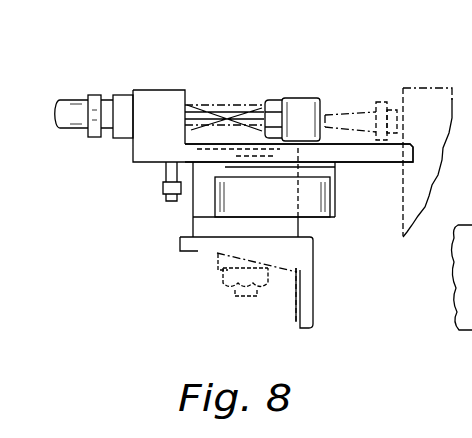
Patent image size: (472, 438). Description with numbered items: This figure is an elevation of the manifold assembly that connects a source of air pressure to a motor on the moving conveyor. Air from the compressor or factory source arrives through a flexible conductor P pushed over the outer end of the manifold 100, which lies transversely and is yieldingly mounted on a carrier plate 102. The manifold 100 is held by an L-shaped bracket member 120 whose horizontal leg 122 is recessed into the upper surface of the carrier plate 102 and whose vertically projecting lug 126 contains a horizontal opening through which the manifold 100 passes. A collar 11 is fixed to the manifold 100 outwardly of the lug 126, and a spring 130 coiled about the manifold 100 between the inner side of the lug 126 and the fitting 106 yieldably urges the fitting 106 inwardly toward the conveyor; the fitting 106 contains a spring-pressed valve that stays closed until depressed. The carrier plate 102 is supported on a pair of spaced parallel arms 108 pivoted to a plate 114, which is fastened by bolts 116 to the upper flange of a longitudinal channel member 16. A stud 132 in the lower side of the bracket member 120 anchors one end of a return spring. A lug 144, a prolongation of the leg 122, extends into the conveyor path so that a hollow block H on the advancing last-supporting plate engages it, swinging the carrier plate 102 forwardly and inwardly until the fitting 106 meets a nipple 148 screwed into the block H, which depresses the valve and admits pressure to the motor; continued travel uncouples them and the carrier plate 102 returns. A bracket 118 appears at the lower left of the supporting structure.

The flexible conductor P is at (77, 122).
The collar 11 is at (128, 80).
The lug 126 is at (141, 90).
The L-shaped bracket member 120 is at (125, 176).
The manifold 100 is at (200, 117).
The spring 130 is at (246, 95).
The fitting 106 is at (301, 107).
The nipple 148 is at (357, 108).
The block H is at (437, 145).
The lug 144 is at (403, 152).
The carrier plate 102 is at (331, 169).
The horizontal leg 122 is at (273, 160).
The arms 108 is at (332, 210).
The plate 114 is at (212, 224).
The bracket 118 is at (180, 243).
The longitudinal channel member 16 is at (309, 306).
The bolts 116 is at (223, 290).
The stud 132 is at (163, 180).